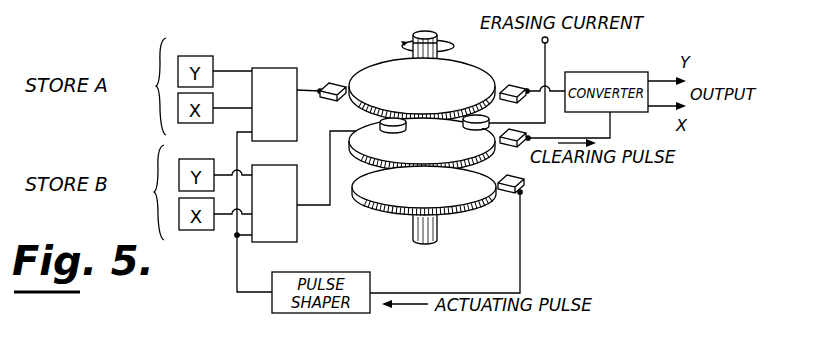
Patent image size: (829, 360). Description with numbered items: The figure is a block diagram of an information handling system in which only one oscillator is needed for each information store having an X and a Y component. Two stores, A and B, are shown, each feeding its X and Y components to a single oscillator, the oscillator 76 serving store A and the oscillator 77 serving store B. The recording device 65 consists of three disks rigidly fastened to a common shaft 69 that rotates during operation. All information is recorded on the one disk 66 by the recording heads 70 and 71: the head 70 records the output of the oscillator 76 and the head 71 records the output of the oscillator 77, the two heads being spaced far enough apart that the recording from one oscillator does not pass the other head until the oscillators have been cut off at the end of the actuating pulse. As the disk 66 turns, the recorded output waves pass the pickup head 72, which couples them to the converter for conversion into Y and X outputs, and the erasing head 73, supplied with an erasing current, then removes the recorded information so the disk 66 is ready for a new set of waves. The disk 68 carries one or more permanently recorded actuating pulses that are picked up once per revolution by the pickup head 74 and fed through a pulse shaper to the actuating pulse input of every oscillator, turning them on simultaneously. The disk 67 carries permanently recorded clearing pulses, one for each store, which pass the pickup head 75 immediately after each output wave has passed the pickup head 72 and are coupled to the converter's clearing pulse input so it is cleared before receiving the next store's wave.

The recording device 65 is at (377, 52).
The disk 66 is at (355, 105).
The disk 67 is at (368, 157).
The disk 68 is at (372, 205).
The shaft 69 is at (427, 34).
The recording head 70 is at (332, 83).
The recording head 71 is at (396, 118).
The pickup head 72 is at (514, 86).
The erasing head 73 is at (478, 115).
The pickup head 74 is at (526, 185).
The pickup head 75 is at (525, 146).
The oscillator 76 is at (274, 69).
The oscillator 77 is at (298, 177).